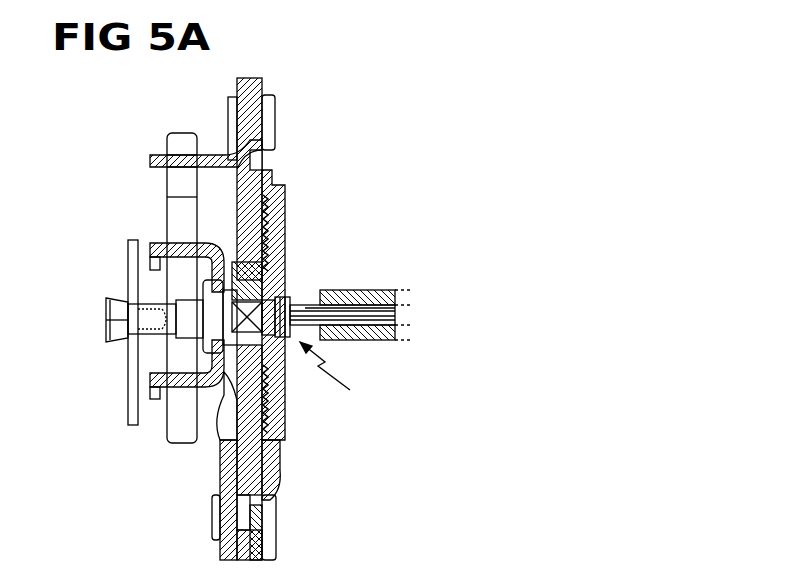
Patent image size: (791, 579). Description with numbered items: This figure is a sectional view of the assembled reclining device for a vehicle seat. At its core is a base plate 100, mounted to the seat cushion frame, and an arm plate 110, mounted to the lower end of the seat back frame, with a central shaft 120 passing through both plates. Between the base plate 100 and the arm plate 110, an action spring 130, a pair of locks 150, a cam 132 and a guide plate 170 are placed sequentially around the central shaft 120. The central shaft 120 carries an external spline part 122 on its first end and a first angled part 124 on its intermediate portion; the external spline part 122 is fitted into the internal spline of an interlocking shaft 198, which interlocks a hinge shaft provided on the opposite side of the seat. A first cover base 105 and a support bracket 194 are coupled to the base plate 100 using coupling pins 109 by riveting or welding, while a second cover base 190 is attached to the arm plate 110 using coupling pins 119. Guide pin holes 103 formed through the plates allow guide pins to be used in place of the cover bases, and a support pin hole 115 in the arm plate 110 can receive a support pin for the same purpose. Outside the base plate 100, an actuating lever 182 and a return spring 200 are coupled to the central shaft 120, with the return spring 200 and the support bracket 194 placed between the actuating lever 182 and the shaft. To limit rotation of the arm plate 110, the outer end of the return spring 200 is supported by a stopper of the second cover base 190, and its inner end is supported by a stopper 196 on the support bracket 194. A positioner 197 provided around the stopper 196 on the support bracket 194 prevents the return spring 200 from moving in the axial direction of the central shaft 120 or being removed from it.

The base plate 100 is at (232, 486).
The guide pin holes 103 is at (242, 512).
The first cover base 105 is at (272, 505).
The coupling pins 109 is at (262, 535).
The arm plate 110 is at (280, 237).
The support pin hole 115 is at (262, 157).
The coupling pins 119 is at (270, 118).
The central shaft 120 is at (340, 379).
The external spline part 122 is at (355, 320).
The first angled part 124 is at (287, 296).
The action spring 130 is at (270, 265).
The cam 132 is at (206, 358).
The locks 150 is at (268, 447).
The guide plate 170 is at (268, 410).
The actuating lever 182 is at (132, 265).
The second cover base 190 is at (240, 152).
The support bracket 194 is at (224, 462).
The stopper 196 is at (158, 245).
The positioner 197 is at (160, 380).
The interlocking shaft 198 is at (378, 291).
The return spring 200 is at (182, 433).